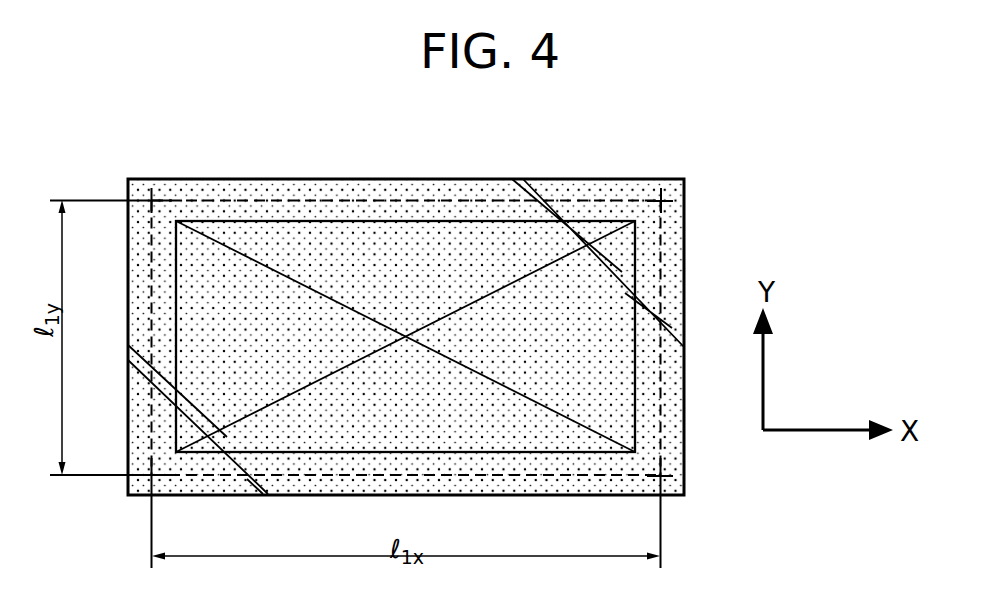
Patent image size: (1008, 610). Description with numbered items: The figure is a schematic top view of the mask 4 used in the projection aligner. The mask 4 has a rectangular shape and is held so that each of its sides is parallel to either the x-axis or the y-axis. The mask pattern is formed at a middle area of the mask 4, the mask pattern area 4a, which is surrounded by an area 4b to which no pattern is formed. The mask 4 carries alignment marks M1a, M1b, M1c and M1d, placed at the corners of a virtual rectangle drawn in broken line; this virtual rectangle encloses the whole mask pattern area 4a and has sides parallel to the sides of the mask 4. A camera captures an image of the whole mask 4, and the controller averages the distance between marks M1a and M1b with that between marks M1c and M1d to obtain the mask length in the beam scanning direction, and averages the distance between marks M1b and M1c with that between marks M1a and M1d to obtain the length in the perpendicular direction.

The mask 4 is at (686, 277).
The mask pattern area 4a is at (432, 250).
The area 4b is at (673, 422).
The alignment mark M1a is at (151, 475).
The alignment mark M1b is at (660, 476).
The alignment mark M1c is at (720, 162).
The alignment mark M1d is at (151, 198).